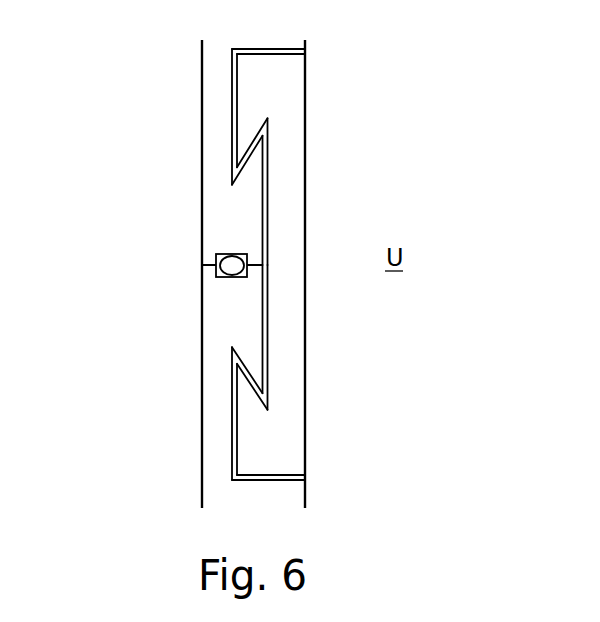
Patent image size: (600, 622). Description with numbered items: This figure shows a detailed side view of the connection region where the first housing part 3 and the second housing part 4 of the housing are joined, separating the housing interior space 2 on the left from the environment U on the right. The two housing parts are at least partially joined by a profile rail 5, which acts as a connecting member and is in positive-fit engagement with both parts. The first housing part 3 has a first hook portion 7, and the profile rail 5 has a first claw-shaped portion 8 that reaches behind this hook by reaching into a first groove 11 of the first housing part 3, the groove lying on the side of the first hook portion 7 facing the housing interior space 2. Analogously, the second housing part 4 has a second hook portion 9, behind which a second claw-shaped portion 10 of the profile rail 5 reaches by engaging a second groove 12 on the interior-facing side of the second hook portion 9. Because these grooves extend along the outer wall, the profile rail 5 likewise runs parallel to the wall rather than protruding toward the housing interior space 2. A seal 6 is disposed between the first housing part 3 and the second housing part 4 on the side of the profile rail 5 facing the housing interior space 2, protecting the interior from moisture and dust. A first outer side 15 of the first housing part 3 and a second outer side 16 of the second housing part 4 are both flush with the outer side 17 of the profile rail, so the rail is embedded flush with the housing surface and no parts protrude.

The housing interior space 2 is at (140, 274).
The first housing part 3 is at (215, 470).
The second housing part 4 is at (218, 93).
The profile rail 5 is at (254, 264).
The seal 6 is at (216, 277).
The first hook portion 7 is at (279, 359).
The first claw-shaped portion 8 is at (249, 404).
The second hook portion 9 is at (279, 143).
The second claw-shaped portion 10 is at (253, 122).
The first groove 11 is at (221, 375).
The second groove 12 is at (221, 169).
The first outer side 15 is at (317, 496).
The second outer side 16 is at (316, 43).
The outer side of the profile rail 17 is at (317, 318).